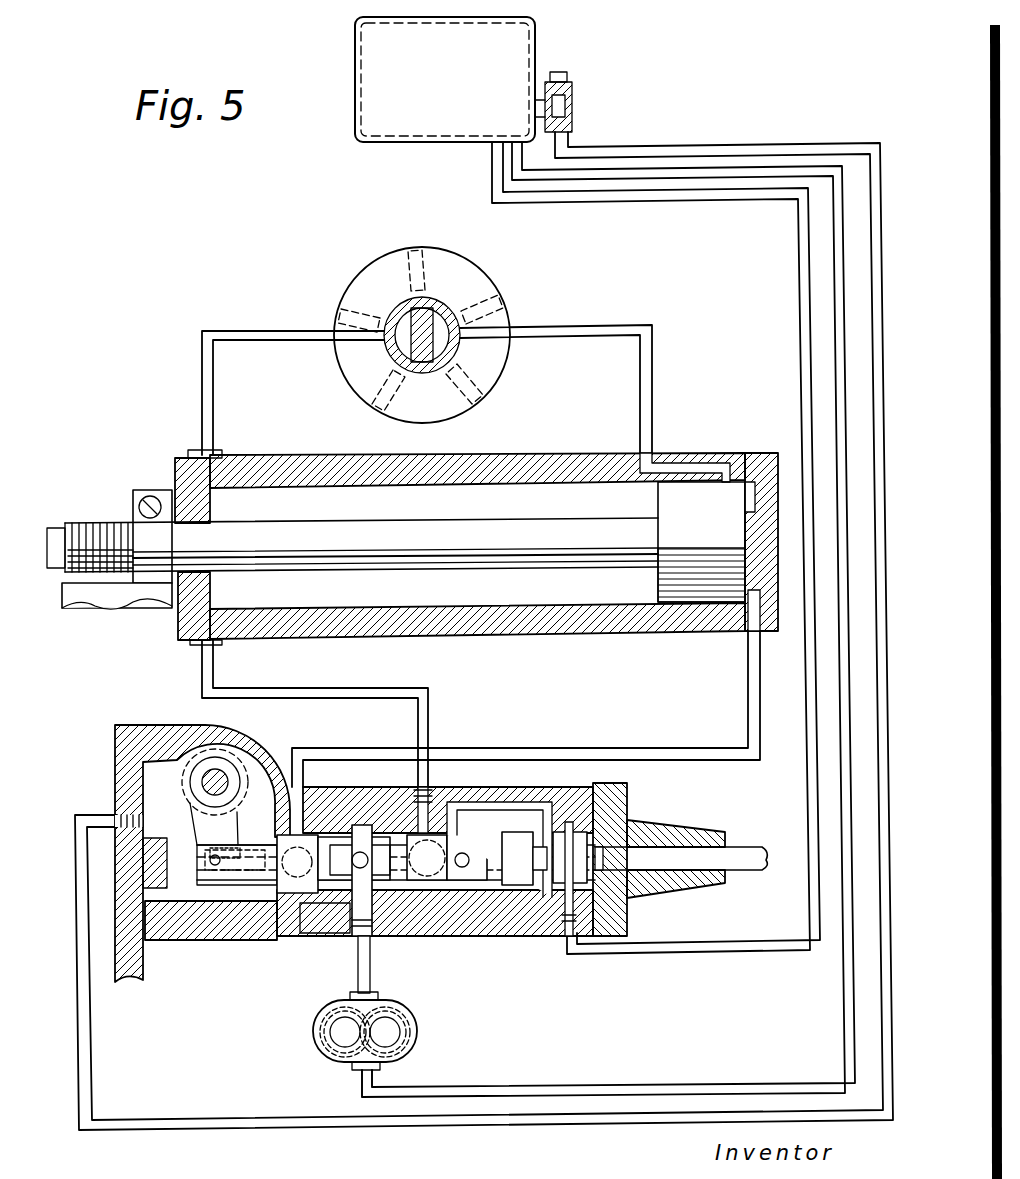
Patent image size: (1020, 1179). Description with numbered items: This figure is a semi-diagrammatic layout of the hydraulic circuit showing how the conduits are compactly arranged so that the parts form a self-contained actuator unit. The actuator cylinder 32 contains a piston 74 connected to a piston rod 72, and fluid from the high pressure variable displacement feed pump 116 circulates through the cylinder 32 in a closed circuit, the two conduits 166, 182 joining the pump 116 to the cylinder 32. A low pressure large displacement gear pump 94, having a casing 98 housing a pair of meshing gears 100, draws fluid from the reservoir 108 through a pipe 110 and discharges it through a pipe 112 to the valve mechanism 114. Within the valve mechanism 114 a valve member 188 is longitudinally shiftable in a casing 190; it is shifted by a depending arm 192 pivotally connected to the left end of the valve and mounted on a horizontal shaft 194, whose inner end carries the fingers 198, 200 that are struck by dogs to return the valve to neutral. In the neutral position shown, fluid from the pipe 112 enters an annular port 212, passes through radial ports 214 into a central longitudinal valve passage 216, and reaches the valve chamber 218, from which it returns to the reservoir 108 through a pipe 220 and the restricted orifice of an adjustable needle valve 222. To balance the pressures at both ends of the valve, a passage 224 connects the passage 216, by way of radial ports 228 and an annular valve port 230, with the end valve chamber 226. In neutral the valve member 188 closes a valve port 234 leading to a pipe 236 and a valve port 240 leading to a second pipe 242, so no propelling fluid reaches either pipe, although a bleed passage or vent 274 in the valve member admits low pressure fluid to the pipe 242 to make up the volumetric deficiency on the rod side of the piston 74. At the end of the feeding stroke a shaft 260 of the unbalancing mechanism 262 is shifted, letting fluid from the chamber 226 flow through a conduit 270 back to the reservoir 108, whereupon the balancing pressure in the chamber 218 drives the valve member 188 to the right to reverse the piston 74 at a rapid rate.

The reservoir 108 is at (445, 79).
The needle valve 222 is at (574, 124).
The high pressure variable displacement pump 116 is at (488, 289).
The conduit 166 is at (246, 331).
The conduit 182 is at (600, 327).
The cylinder 32 is at (563, 454).
The piston rod 72 is at (350, 526).
The piston 74 is at (698, 583).
The pipe 242 is at (382, 688).
The pipe 236 is at (660, 748).
The valve chamber 218 is at (160, 792).
The finger 198 is at (176, 745).
The horizontal shaft 194 is at (216, 770).
The finger 200 is at (248, 753).
The depending arm 192 is at (205, 825).
The valve member 188 is at (287, 882).
The valve port 234 is at (297, 880).
The central longitudinal valve passage 216 is at (246, 882).
The annular port 212 is at (368, 890).
The radial ports 214 is at (360, 852).
The pipe 112 is at (372, 973).
The valve port 240 is at (443, 832).
The bleed passage or vent 274 is at (418, 830).
The radial ports 228 is at (465, 852).
The passage 224 is at (505, 803).
The end valve chamber 226 is at (520, 840).
The casing 190 is at (548, 927).
The annular valve port 230 is at (455, 893).
The valve mechanism 114 is at (327, 944).
The unbalancing mechanism 262 is at (640, 815).
The shaft 260 is at (756, 847).
The conduit 270 is at (724, 954).
The pipe 110 is at (848, 1010).
The pipe 220 is at (264, 1121).
The gear pump 94 is at (422, 1028).
The meshing gears 100 is at (422, 1036).
The casing 98 is at (395, 1060).